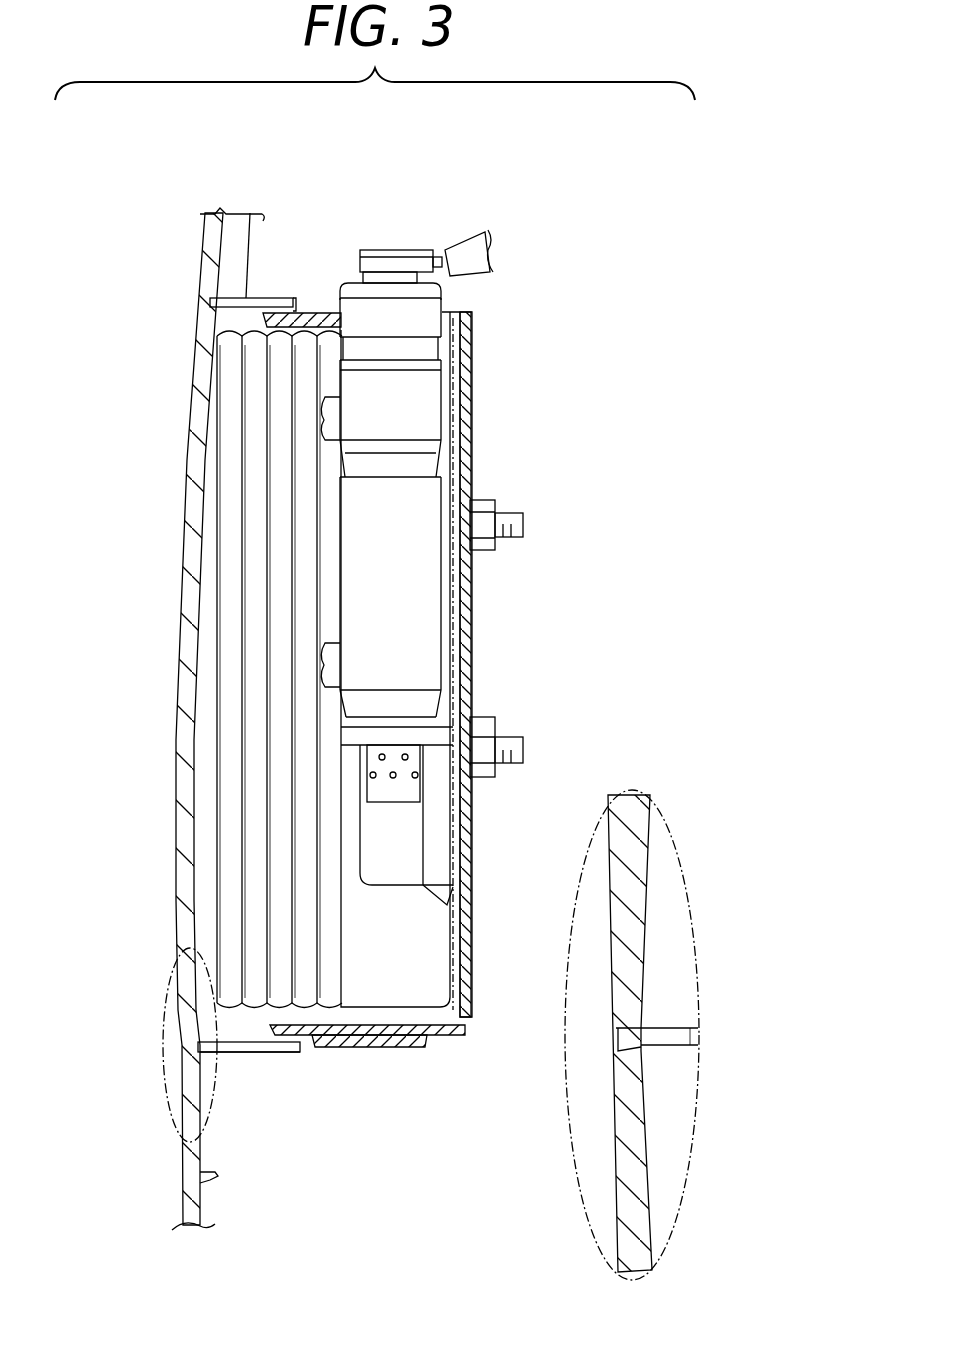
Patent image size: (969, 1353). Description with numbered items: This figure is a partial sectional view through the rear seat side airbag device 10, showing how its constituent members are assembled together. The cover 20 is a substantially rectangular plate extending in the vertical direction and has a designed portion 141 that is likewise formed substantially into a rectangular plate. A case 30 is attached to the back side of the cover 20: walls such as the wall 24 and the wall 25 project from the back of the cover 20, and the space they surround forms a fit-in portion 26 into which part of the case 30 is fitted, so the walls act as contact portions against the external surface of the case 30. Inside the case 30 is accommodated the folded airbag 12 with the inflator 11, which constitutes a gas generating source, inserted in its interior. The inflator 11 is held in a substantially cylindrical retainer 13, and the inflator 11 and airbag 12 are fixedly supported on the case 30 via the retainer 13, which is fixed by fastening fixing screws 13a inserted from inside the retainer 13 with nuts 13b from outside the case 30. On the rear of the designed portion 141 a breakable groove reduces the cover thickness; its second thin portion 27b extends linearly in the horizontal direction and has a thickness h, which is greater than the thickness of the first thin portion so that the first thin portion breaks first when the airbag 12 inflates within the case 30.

The rear seat side airbag device 10 is at (533, 281).
The inflator 11 is at (433, 612).
The airbag 12 is at (220, 838).
The retainer 13 is at (394, 888).
The fixing screw 13a is at (523, 526).
The nut 13b is at (496, 501).
The designed portion 141 is at (190, 508).
The cover 20 is at (178, 740).
The wall 24 is at (283, 300).
The wall 25 is at (256, 1050).
The fit-in portion 26 is at (233, 1050).
The second thin portion 27b is at (190, 1043).
The case 30 is at (463, 650).
The thickness of second breakable portion h is at (647, 1051).